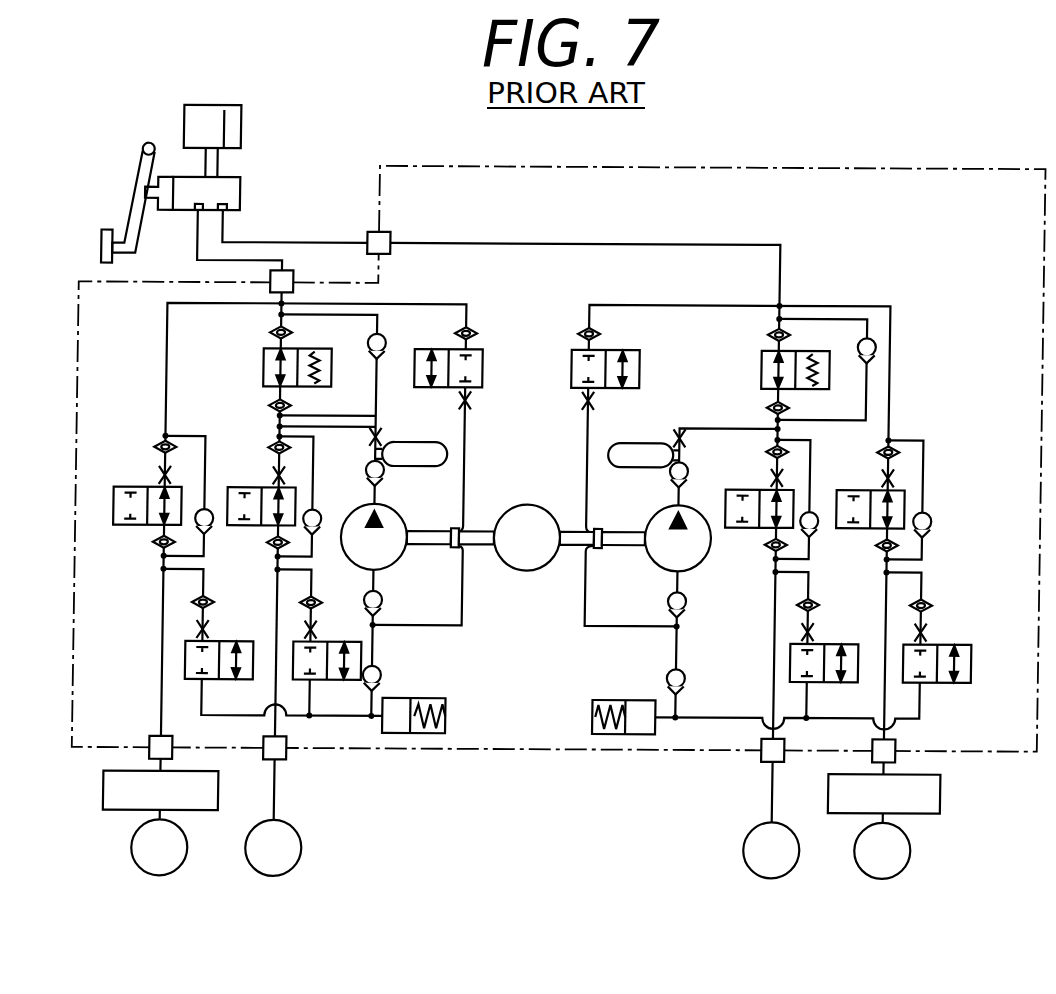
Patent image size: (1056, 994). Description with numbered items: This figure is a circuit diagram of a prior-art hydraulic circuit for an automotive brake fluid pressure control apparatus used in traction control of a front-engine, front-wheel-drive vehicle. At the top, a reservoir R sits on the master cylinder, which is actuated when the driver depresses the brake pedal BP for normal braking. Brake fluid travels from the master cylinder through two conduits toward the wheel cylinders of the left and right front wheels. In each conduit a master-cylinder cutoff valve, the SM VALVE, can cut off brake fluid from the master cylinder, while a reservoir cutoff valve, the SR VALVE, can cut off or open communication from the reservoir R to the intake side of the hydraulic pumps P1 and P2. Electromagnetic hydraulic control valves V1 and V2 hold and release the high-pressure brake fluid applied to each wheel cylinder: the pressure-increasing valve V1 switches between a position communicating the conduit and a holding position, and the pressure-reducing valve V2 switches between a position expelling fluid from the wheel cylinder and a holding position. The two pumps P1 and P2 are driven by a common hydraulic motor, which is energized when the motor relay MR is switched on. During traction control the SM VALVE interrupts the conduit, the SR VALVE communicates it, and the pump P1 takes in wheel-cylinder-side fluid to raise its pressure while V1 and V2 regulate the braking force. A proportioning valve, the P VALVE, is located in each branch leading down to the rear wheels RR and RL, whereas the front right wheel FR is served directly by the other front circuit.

The reservoir R is at (237, 122).
The brake pedal BP is at (99, 242).
The master-cylinder cutoff valve SM VALVE is at (263, 351).
The reservoir cutoff valve SR VALVE is at (481, 349).
The hydraulic control valve V1 is at (261, 494).
The hydraulic control valve V2 is at (326, 673).
The hydraulic pump P1 is at (405, 521).
The hydraulic pump P2 is at (651, 521).
The motor relay MR is at (529, 504).
The proportioning valve P VALVE is at (522, 793).
The rear right wheel RR is at (159, 847).
The front right wheel FR is at (771, 850).
The rear left wheel RL is at (882, 851).